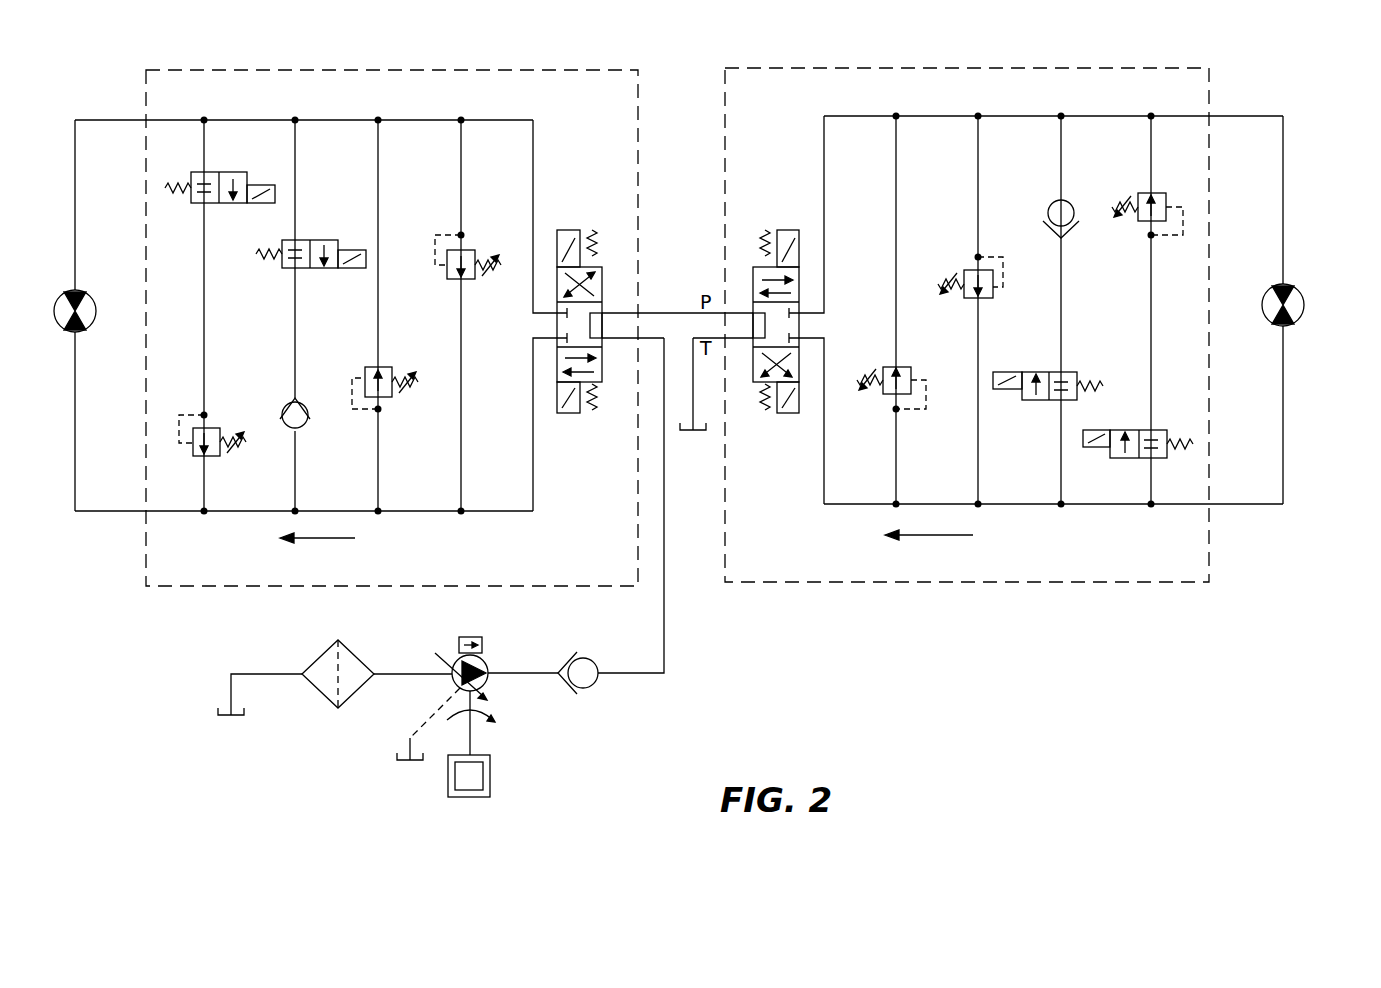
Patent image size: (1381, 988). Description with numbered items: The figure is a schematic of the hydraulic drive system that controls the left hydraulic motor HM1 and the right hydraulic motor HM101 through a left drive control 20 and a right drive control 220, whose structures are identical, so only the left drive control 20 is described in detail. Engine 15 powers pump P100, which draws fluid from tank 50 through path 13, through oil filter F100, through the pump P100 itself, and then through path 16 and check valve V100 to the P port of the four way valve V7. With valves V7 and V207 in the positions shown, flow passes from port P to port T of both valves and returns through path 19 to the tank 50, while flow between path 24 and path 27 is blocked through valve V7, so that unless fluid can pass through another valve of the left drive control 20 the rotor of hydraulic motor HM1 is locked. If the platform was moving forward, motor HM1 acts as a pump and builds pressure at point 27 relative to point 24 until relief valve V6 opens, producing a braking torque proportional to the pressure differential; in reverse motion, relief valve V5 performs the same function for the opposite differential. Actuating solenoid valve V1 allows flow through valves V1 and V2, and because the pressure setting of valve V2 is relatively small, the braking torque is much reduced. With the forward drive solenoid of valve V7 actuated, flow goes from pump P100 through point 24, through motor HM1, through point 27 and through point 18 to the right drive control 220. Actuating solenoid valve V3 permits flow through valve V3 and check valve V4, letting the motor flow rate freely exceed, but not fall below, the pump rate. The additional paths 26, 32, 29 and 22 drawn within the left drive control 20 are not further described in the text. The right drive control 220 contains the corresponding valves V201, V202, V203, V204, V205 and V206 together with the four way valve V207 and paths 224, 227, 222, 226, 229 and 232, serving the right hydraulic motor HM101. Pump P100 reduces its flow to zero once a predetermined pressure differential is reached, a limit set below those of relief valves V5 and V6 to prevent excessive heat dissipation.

The left drive control 20 is at (592, 70).
The right drive control 220 is at (820, 68).
The path 27 is at (492, 116).
The path 24 is at (512, 512).
The branch line 26 is at (382, 187).
The branch line 32 is at (207, 335).
The branch line 29 is at (298, 335).
The branch line 22 is at (465, 335).
The point 18 is at (680, 312).
The path 19 is at (697, 384).
The top supply line of right drive control 224 is at (1183, 115).
The return line of right drive control 227 is at (838, 510).
The branch line 222 is at (893, 215).
The branch line 226 is at (984, 346).
The branch line 229 is at (1063, 347).
The branch line 232 is at (1153, 355).
The path 13 is at (231, 690).
The tank 50 is at (227, 718).
The path 16 is at (517, 676).
The engine 15 is at (492, 785).
The oil filter F100 is at (377, 662).
The pump P100 is at (471, 695).
The check valve V100 is at (611, 516).
The left hydraulic motor HM1 is at (93, 315).
The right hydraulic motor HM101 is at (1321, 310).
The solenoid operating valve V1 is at (220, 173).
The relief valve V2 is at (212, 430).
The solenoid valve V3 is at (311, 239).
The check valve V4 is at (306, 429).
The relief valve V5 is at (385, 375).
The relief valve V6 is at (468, 251).
The four way valve V7 is at (579, 309).
The solenoid valve V201 is at (1149, 430).
The relief valve V202 is at (1163, 203).
The solenoid valve V203 is at (1060, 372).
The check valve V204 is at (1044, 207).
The relief valve V205 is at (989, 262).
The relief valve V206 is at (908, 375).
The four way valve V207 is at (784, 306).